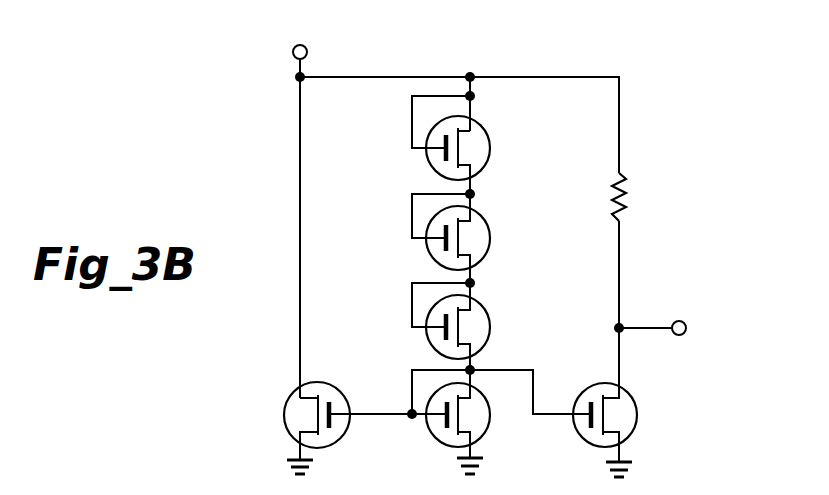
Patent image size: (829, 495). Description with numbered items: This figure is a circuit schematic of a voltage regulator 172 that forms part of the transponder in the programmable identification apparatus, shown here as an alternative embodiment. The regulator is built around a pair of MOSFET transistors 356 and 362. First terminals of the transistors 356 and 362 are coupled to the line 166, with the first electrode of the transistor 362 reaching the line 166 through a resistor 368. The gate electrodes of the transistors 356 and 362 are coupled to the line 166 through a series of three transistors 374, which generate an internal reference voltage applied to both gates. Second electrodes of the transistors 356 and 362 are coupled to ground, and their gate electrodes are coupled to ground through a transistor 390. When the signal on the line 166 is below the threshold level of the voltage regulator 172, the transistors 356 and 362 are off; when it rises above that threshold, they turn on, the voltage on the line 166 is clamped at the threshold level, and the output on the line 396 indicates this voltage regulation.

The line 166 is at (292, 52).
The voltage regulator 172 is at (242, 183).
The MOSFET transistor 356 is at (287, 405).
The MOSFET transistor 362 is at (638, 423).
The resistor 368 is at (627, 188).
The transistors 374 is at (490, 141).
The transistor 390 is at (485, 437).
The line 396 is at (687, 323).